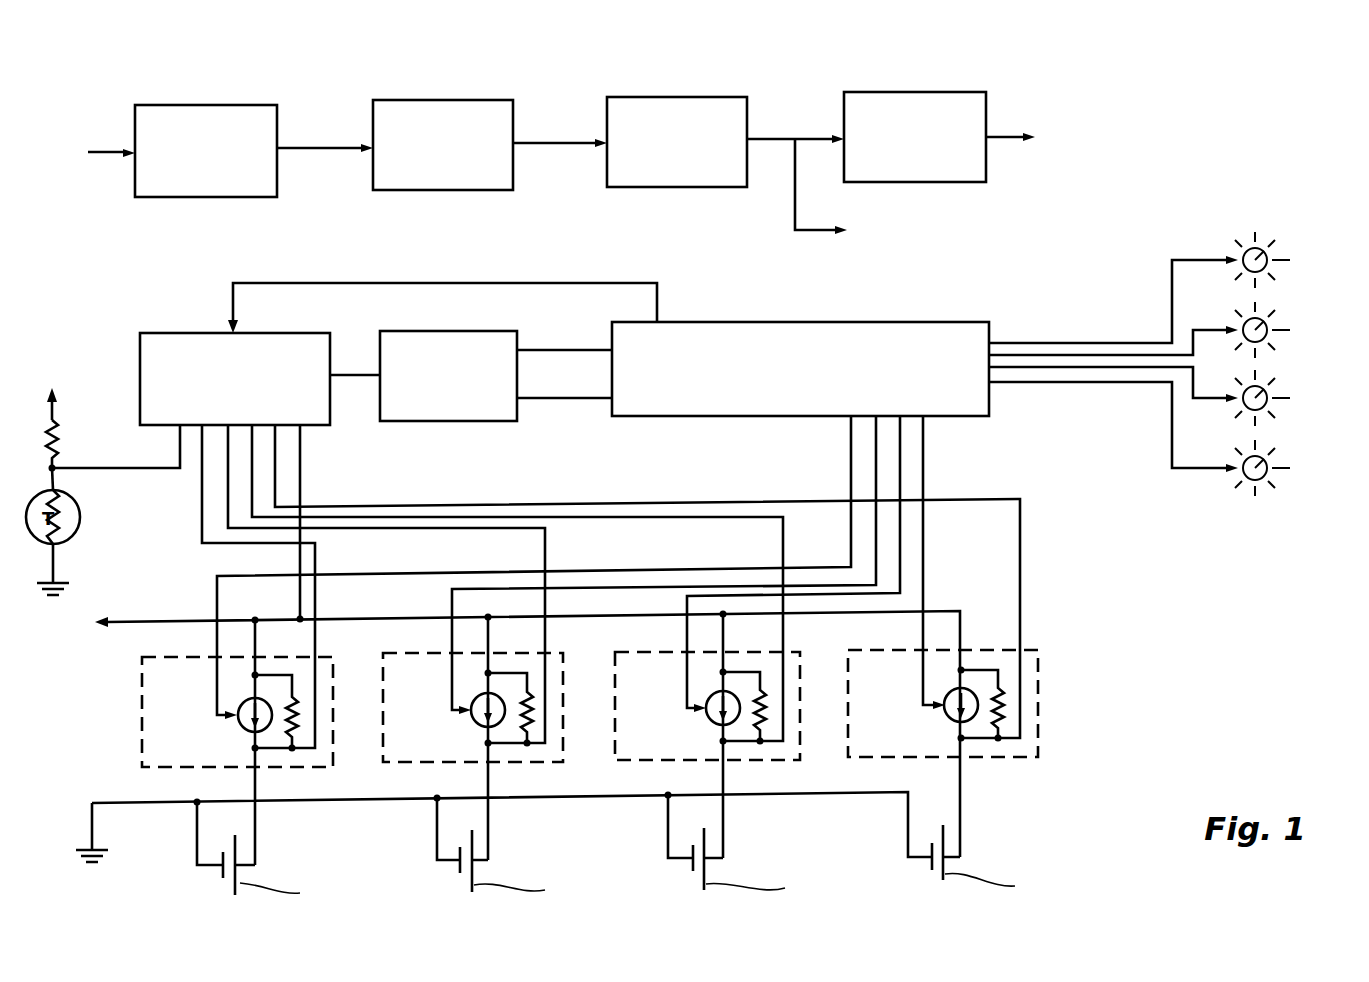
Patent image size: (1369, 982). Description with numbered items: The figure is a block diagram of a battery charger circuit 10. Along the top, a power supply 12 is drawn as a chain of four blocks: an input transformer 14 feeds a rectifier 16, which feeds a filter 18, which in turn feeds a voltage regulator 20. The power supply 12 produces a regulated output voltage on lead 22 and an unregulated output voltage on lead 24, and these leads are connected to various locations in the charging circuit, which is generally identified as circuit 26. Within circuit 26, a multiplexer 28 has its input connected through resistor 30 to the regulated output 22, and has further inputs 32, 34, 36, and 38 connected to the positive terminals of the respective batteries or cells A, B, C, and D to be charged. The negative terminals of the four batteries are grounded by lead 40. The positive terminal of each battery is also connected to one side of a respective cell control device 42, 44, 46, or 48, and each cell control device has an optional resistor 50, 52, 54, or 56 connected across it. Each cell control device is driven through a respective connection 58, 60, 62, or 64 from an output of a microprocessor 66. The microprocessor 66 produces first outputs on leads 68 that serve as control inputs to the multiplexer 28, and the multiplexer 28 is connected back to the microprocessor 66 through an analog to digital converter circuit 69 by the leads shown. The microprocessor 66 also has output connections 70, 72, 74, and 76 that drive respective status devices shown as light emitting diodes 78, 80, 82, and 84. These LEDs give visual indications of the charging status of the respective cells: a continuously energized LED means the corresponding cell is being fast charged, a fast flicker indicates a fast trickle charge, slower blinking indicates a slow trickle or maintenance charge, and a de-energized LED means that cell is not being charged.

The battery charger circuit 10 is at (1152, 149).
The power supply 12 is at (1038, 84).
The input transformer 14 is at (202, 168).
The rectifier 16 is at (450, 165).
The filter 18 is at (679, 157).
The voltage regulator 20 is at (930, 146).
The lead 22 is at (1008, 139).
The lead 24 is at (811, 232).
The circuit 26 is at (938, 288).
The multiplexer 28 is at (200, 360).
The resistor 30 is at (58, 441).
The multiplexer input 32 is at (200, 494).
The multiplexer input 34 is at (228, 520).
The multiplexer input 36 is at (272, 522).
The multiplexer input 38 is at (277, 452).
The lead 40 is at (557, 849).
The cell control device 42 is at (128, 718).
The cell control device 44 is at (414, 770).
The cell control device 46 is at (644, 769).
The cell control device 48 is at (978, 770).
The resistor 50 is at (297, 715).
The resistor 52 is at (530, 710).
The resistor 54 is at (765, 708).
The resistor 56 is at (1003, 715).
The connection 58 is at (393, 576).
The connection 60 is at (640, 586).
The connection 62 is at (800, 593).
The connection 64 is at (925, 548).
The microprocessor 66 is at (706, 352).
The leads 68 is at (560, 193).
The analog to digital converter circuit 69 is at (479, 344).
The output connection 70 is at (1032, 343).
The output connection 72 is at (1100, 355).
The output connection 74 is at (1036, 368).
The output connection 76 is at (1115, 383).
The light emitting diode 78 is at (1268, 251).
The light emitting diode 80 is at (1268, 322).
The light emitting diode 82 is at (1268, 392).
The light emitting diode 84 is at (1268, 461).